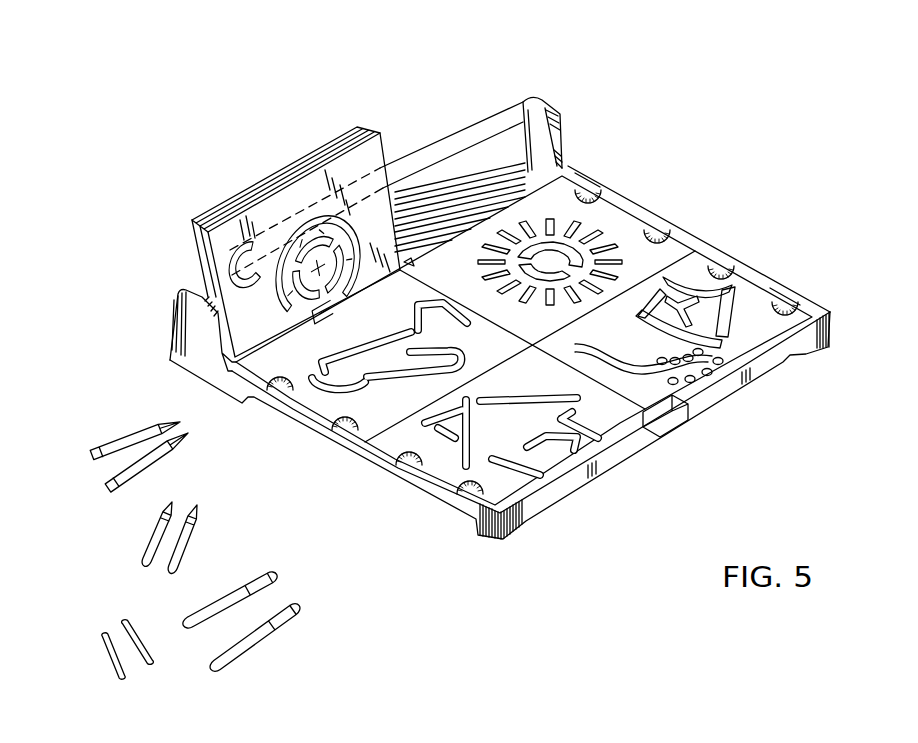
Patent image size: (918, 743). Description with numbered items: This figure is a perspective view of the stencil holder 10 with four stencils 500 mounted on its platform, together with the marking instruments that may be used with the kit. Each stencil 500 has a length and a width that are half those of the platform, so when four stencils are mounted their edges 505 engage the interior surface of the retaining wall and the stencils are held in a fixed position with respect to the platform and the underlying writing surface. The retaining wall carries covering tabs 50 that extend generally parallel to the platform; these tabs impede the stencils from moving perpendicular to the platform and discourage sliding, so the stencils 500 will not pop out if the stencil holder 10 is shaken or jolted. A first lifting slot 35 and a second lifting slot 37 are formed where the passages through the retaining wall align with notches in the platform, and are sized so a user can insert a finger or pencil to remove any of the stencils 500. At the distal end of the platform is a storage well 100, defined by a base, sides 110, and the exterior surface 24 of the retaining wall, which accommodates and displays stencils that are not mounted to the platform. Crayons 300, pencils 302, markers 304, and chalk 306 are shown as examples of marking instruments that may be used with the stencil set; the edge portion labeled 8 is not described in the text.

The stencil holder 10 is at (737, 213).
The rim edge of tray 8 is at (584, 181).
The exterior surface 24 is at (255, 350).
The first lifting slot 35 is at (665, 420).
The second lifting slot 37 is at (412, 260).
The covering tabs 50 is at (712, 264).
The storage well 100 is at (505, 122).
The sides 110 is at (462, 128).
The crayons 300 is at (149, 535).
The pencils 302 is at (126, 436).
The markers 304 is at (287, 605).
The chalk 306 is at (123, 637).
The stencils 500 is at (280, 203).
The edges 505 is at (515, 485).